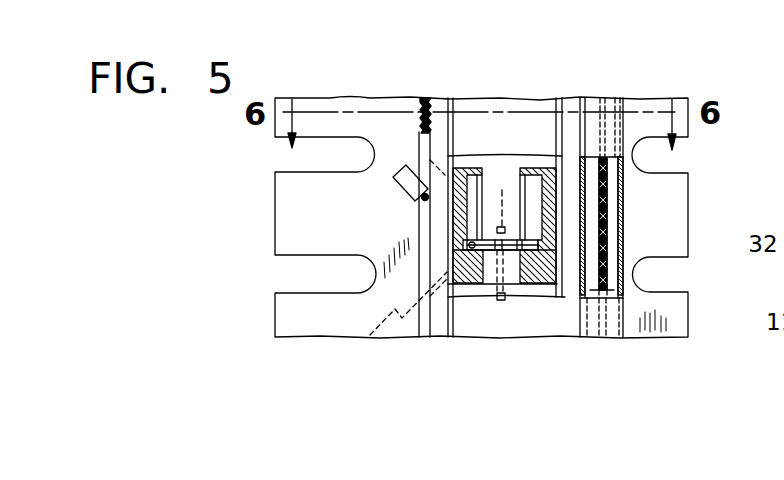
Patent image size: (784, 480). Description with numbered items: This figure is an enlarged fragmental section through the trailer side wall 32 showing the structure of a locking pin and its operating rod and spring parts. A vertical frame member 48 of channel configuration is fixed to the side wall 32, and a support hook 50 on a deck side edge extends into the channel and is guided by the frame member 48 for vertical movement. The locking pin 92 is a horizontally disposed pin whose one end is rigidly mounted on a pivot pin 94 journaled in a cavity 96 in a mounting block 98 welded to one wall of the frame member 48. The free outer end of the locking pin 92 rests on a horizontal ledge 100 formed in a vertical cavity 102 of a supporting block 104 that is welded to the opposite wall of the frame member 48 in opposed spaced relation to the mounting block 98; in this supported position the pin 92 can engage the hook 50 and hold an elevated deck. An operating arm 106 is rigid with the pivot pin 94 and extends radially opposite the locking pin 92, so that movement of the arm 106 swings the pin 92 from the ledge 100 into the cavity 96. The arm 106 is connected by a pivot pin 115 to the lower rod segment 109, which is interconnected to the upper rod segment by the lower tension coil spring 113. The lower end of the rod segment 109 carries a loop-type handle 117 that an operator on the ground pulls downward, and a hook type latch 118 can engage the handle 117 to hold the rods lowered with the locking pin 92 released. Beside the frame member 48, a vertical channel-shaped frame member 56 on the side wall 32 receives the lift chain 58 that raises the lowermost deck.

The side wall 32 is at (687, 208).
The vertical frame member 48 is at (497, 118).
The support hook 50 is at (502, 233).
The vertical channel-shaped frame member 56 is at (613, 117).
The lift chain 58 is at (603, 287).
The locking pin 92 is at (510, 252).
The pivot pin 94 is at (475, 284).
The cavity 96 is at (478, 172).
The mounting block 98 is at (457, 177).
The horizontal ledge 100 is at (543, 288).
The vertical cavity 102 is at (531, 170).
The supporting block 104 is at (558, 167).
The operating arm 106 is at (404, 178).
The lower rod segment 109 is at (448, 314).
The lower tension coil spring 113 is at (427, 97).
The pivot pin 115 is at (422, 200).
The loop-type handle 117 is at (357, 0).
The hook type latch 118 is at (310, 0).